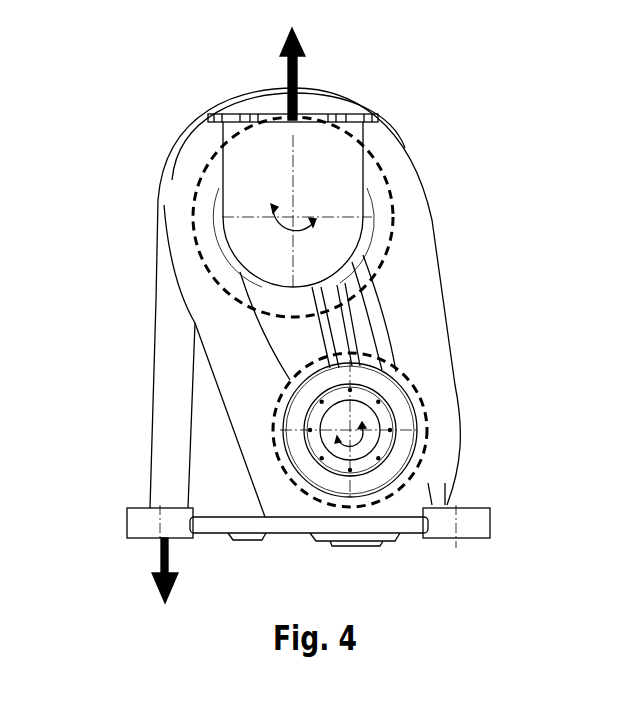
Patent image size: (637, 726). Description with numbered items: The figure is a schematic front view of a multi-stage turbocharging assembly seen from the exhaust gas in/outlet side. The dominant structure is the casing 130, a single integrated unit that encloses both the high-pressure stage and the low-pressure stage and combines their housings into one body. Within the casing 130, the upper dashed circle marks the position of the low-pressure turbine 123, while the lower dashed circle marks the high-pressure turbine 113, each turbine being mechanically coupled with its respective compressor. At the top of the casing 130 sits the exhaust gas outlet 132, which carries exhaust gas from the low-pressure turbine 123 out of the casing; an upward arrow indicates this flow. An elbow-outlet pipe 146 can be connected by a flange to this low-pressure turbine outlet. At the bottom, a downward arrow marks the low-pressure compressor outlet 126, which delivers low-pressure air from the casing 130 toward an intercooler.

The casing 130 is at (178, 135).
The exhaust gas outlet 132 is at (300, 74).
The elbow-outlet pipe 146 is at (347, 163).
The low-pressure turbine 123 is at (393, 193).
The high-pressure turbine 113 is at (421, 398).
The low-pressure compressor outlet 126 is at (163, 553).